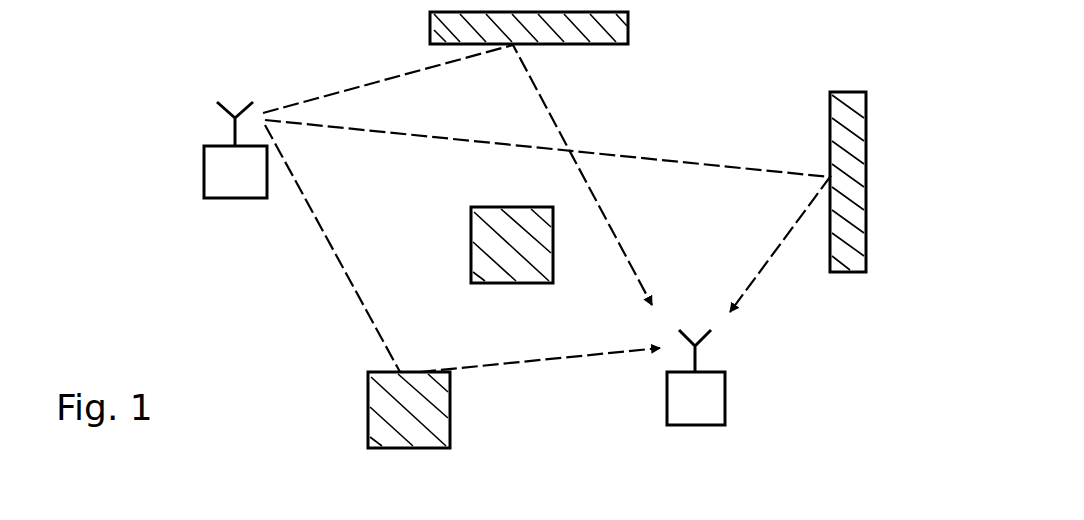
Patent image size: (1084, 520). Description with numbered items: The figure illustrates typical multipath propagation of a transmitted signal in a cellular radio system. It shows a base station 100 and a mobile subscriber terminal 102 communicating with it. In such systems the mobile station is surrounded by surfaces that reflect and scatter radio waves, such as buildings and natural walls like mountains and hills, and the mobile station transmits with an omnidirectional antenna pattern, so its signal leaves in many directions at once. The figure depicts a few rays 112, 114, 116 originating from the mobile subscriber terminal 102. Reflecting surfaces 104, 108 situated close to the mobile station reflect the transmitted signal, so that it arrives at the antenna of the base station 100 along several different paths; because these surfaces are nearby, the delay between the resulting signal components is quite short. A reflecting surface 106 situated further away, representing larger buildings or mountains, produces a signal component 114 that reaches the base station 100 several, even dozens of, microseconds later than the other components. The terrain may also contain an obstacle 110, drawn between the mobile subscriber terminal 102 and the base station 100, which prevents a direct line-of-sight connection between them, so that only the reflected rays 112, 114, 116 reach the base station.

The base station 100 is at (667, 390).
The mobile subscriber terminal 102 is at (204, 162).
The reflecting surface 104 is at (628, 27).
The reflecting surface situated further 106 is at (850, 92).
The reflecting surface 108 is at (368, 405).
The obstacle 110 is at (471, 240).
The ray 112 is at (548, 97).
The signal component 114 is at (690, 162).
The ray 116 is at (333, 243).